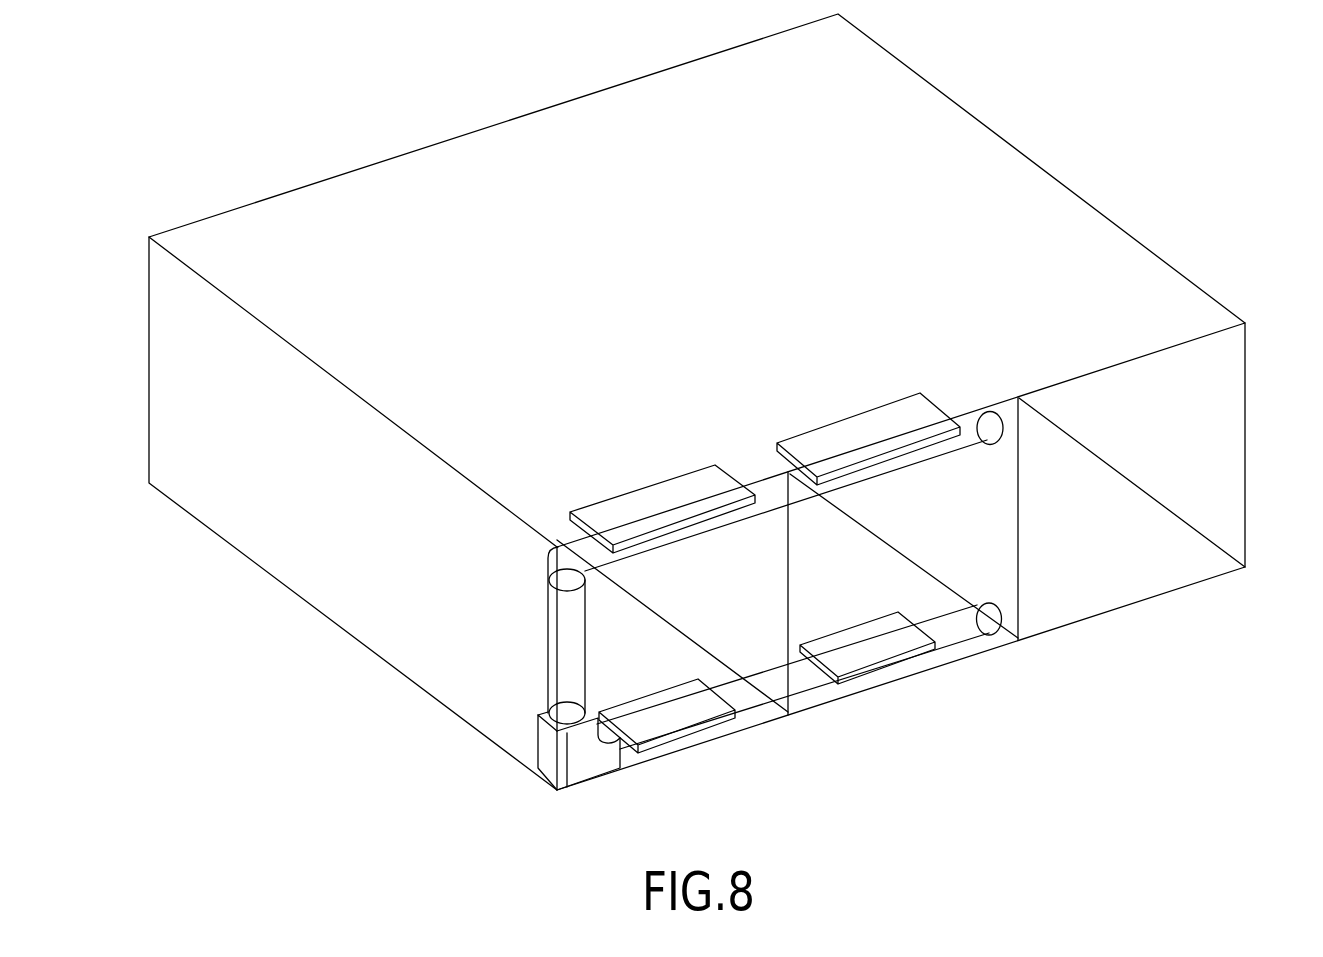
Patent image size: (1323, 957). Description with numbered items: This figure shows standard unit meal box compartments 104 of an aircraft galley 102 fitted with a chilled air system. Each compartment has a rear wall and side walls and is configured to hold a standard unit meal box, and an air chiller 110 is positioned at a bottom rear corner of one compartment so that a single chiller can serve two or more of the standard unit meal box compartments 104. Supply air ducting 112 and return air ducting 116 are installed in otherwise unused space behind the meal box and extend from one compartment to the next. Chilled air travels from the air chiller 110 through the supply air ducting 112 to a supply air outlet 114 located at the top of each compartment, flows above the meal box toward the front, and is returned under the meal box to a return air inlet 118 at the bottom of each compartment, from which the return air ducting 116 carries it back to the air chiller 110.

The galley 102 is at (118, 107).
The standard unit meal box compartments 104 is at (1232, 451).
The air chiller 110 is at (583, 759).
The supply air ducting 112 is at (771, 490).
The supply air outlet 114 is at (650, 497).
The return air ducting 116 is at (807, 677).
The return air inlet 118 is at (663, 705).